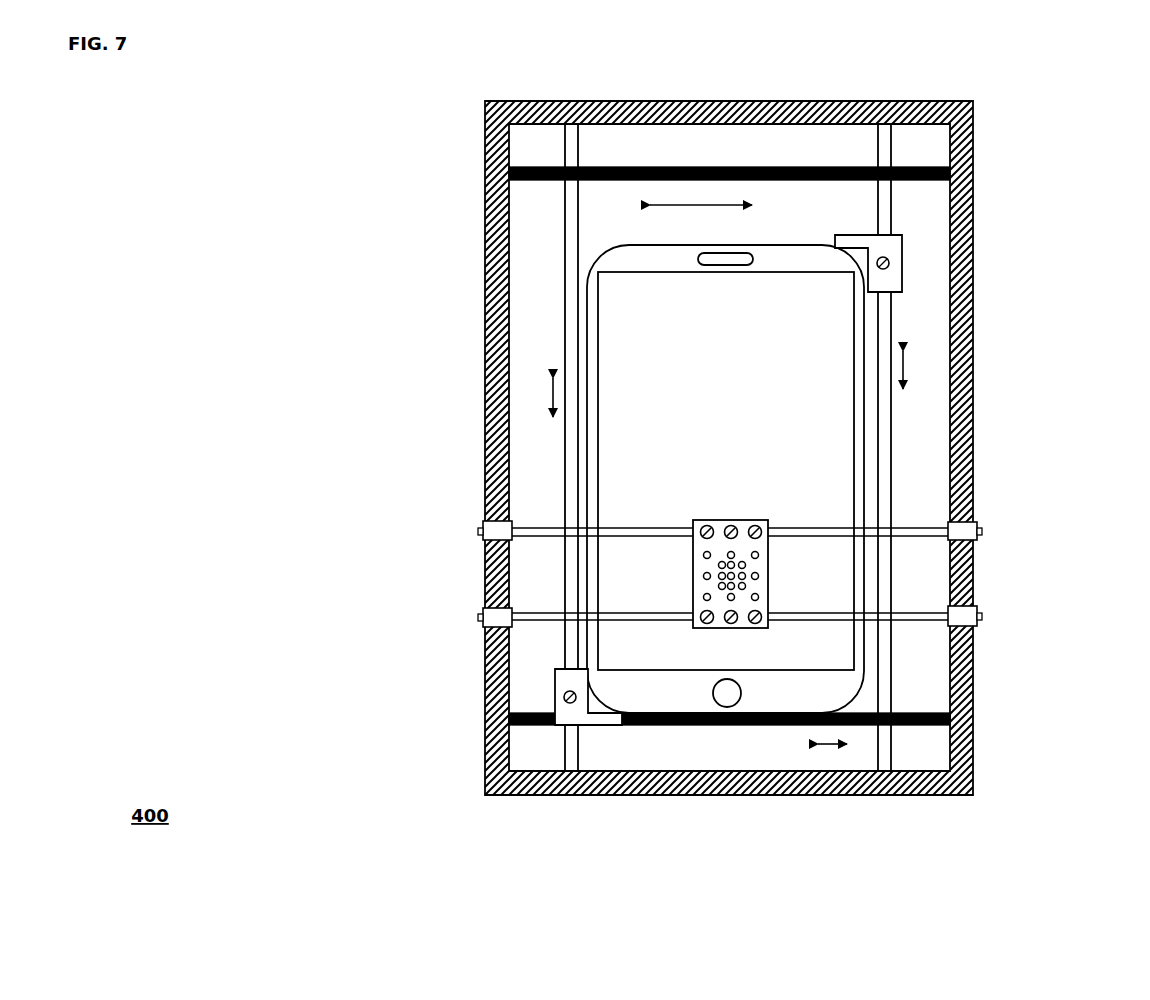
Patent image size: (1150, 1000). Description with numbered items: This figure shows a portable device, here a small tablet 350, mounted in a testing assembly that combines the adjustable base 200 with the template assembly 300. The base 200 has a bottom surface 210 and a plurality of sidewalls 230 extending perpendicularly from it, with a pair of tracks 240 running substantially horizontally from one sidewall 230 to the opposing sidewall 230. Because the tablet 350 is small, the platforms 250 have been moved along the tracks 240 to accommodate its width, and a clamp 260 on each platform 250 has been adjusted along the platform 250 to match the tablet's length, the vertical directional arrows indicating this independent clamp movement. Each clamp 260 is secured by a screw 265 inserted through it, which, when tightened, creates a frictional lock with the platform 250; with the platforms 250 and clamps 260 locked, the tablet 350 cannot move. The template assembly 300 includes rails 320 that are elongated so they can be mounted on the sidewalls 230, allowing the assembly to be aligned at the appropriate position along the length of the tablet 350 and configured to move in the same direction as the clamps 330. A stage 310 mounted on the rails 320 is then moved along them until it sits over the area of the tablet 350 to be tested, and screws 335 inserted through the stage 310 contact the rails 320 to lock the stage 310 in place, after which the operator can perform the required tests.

The base 200 is at (1047, 134).
The bottom surface 210 is at (729, 447).
The sidewall 230 is at (730, 100).
The track 240 is at (735, 168).
The platform 250 is at (551, 330).
The clamp 260 is at (845, 235).
The screw 265 is at (889, 263).
The template assembly 300 is at (750, 491).
The stage 310 is at (770, 584).
The rail 320 is at (497, 302).
The clamp 330 is at (960, 540).
The screw 335 is at (982, 531).
The tablet 350 is at (725, 479).